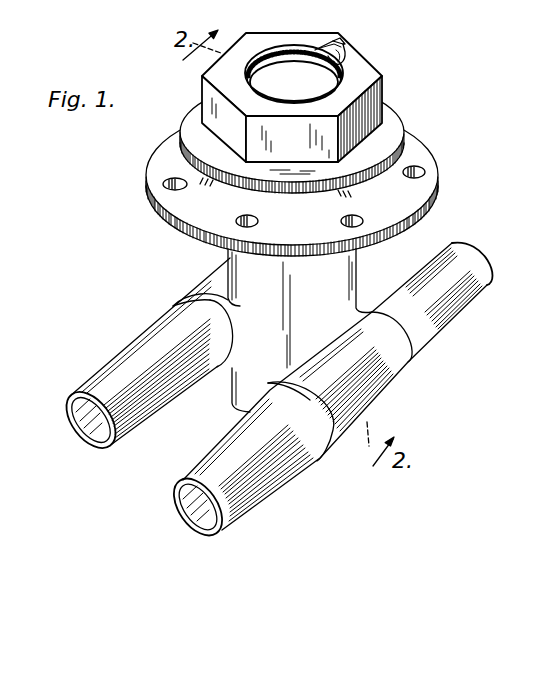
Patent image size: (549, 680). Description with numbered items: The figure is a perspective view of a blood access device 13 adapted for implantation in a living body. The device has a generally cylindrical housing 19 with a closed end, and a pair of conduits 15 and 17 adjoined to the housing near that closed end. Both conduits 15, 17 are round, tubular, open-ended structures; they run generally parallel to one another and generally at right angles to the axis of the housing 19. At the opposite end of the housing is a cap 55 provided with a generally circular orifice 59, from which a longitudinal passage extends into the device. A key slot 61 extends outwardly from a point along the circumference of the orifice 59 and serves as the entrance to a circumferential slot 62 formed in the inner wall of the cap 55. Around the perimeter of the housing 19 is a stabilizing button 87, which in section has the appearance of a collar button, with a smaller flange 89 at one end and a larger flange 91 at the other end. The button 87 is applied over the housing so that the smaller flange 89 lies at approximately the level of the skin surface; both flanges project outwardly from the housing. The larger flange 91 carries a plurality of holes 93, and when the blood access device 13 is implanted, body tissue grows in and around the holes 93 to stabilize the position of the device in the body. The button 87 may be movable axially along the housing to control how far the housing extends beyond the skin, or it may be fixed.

The blood access device 13 is at (427, 118).
The conduit 15 is at (263, 496).
The conduit 17 is at (132, 344).
The housing 19 is at (347, 268).
The cap 55 is at (363, 72).
The orifice 59 is at (276, 78).
The key slot 61 is at (333, 42).
The circumferential slot 62 is at (342, 44).
The stabilizing button 87 is at (392, 171).
The smaller flange 89 is at (397, 101).
The larger flange 91 is at (440, 192).
The holes 93 is at (238, 221).